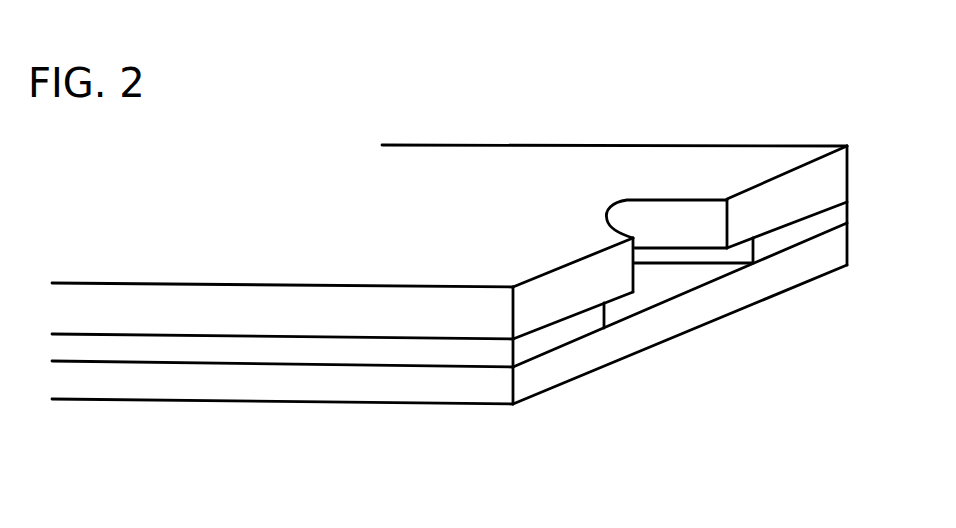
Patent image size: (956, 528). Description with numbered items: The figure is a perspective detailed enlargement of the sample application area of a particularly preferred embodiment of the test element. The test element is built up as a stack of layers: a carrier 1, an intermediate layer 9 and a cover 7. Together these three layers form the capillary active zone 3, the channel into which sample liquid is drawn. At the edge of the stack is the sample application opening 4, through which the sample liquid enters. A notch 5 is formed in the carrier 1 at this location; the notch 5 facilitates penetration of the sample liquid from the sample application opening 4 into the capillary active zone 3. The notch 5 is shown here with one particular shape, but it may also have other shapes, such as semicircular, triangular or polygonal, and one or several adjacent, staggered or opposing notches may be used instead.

The carrier 1 is at (507, 183).
The capillary active zone 3 is at (625, 303).
The sample application opening 4 is at (677, 273).
The notch 5 is at (662, 220).
The cover 7 is at (332, 385).
The intermediate layer 9 is at (537, 340).